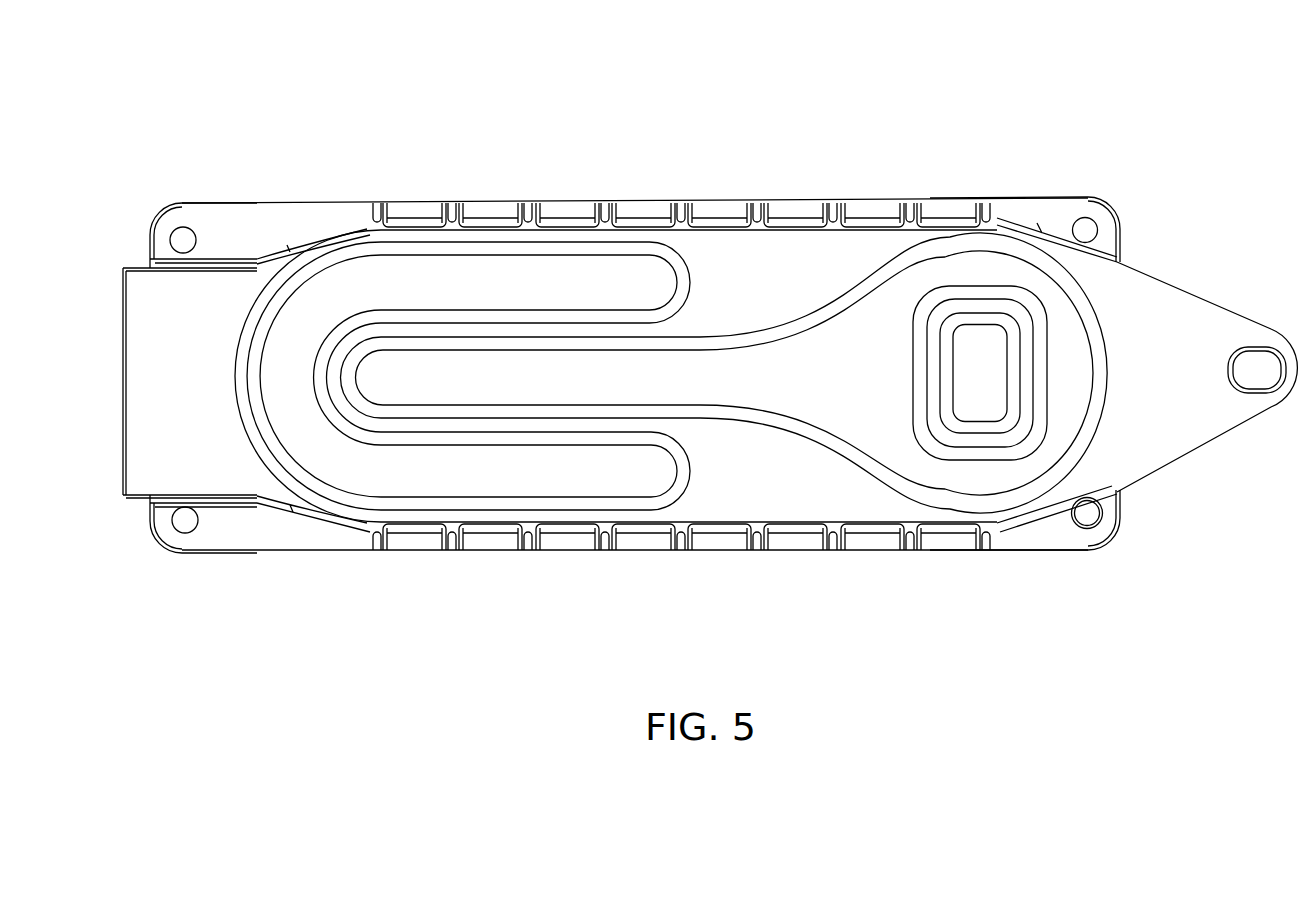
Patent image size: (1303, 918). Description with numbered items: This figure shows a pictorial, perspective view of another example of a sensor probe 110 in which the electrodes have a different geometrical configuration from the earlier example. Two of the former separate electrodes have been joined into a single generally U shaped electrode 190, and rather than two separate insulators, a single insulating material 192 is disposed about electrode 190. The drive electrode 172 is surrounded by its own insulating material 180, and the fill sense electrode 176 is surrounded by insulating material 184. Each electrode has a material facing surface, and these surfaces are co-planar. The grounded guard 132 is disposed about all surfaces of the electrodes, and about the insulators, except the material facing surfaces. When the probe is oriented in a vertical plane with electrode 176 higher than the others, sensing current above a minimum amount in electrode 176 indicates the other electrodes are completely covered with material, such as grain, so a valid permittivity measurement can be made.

The sensor probe 110 is at (324, 99).
The grounded guard 132 is at (793, 490).
The U shaped electrode 190 is at (507, 475).
The insulating material 192 is at (603, 503).
The insulating material 180 is at (905, 478).
The drive electrode 172 is at (960, 478).
The insulating material 184 is at (992, 428).
The fill sense electrode 176 is at (998, 355).